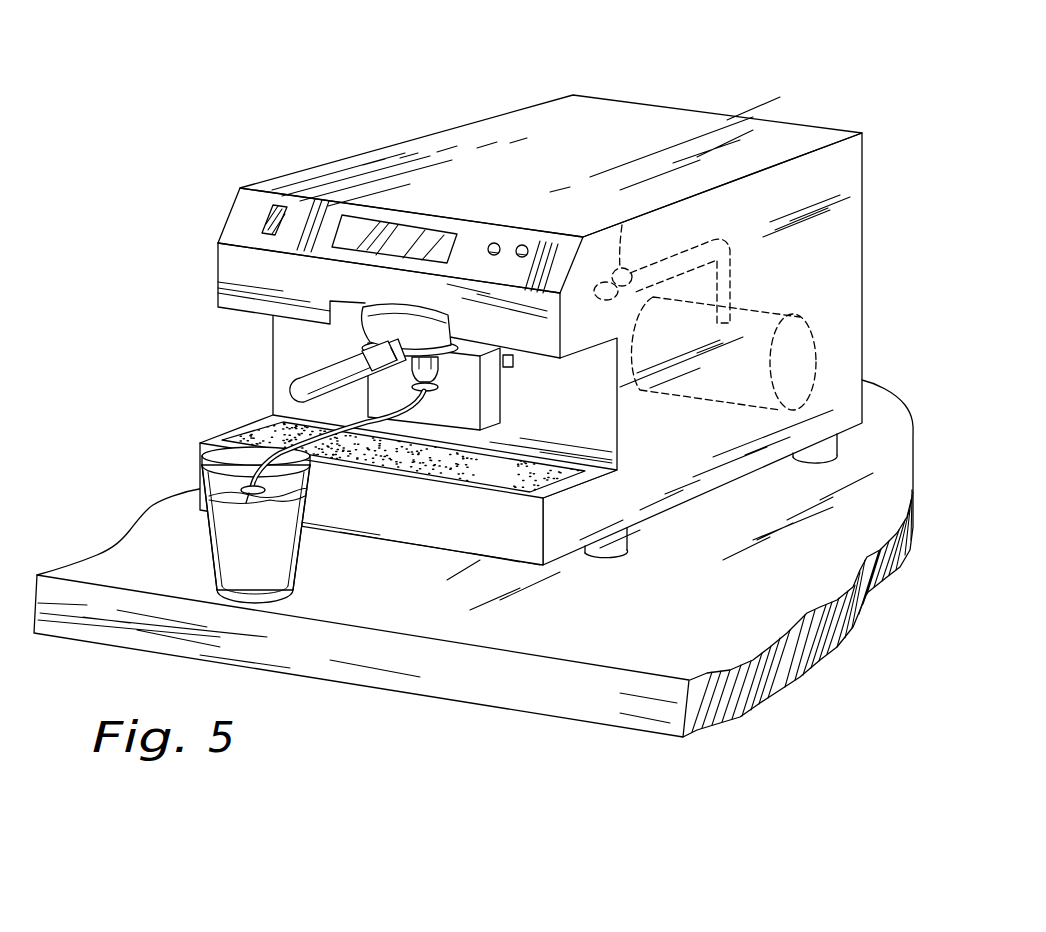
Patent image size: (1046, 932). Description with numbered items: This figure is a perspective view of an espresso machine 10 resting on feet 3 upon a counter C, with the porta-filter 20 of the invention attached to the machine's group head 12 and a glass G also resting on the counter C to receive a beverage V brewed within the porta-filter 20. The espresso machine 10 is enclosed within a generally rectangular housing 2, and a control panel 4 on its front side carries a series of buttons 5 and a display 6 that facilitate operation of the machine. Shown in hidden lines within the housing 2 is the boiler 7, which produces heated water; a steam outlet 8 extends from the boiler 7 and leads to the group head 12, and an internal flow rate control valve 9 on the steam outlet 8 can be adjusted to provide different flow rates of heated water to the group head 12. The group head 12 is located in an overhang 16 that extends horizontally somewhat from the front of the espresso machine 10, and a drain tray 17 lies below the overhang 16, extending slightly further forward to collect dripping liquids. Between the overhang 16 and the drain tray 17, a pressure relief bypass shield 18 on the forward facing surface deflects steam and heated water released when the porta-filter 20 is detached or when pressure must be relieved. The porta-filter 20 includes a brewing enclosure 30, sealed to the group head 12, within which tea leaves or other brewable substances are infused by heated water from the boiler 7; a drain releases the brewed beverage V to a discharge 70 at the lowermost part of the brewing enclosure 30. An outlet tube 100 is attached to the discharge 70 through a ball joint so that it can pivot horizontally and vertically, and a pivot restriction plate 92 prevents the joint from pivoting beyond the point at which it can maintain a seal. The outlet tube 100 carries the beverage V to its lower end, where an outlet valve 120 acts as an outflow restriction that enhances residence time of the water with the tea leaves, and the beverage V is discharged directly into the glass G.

The espresso machine 10 is at (700, 97).
The housing 2 is at (417, 146).
The control panel 4 is at (243, 210).
The display 6 is at (392, 216).
The buttons 5 is at (521, 247).
The internal flow rate control valve 9 is at (621, 228).
The steam outlet 8 is at (676, 256).
The boiler 7 is at (789, 314).
The group head 12 is at (387, 306).
The brewing enclosure 30 is at (366, 328).
The porta-filter 20 is at (318, 373).
The overhang 16 is at (591, 352).
The drain tray 17 is at (247, 438).
The pressure relief bypass shield 18 is at (503, 411).
The discharge 70 is at (442, 362).
The pivot restriction plate 92 is at (430, 389).
The outlet tube 100 is at (346, 442).
The outlet valve 120 is at (240, 493).
The feet 3 is at (617, 545).
The glass G is at (210, 538).
The beverage V is at (277, 557).
The counter C is at (730, 597).